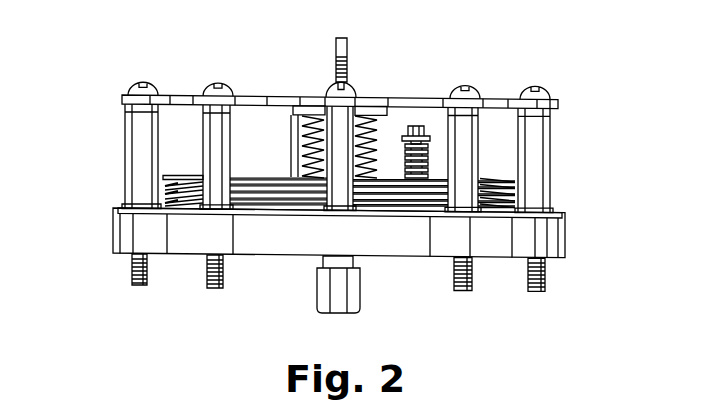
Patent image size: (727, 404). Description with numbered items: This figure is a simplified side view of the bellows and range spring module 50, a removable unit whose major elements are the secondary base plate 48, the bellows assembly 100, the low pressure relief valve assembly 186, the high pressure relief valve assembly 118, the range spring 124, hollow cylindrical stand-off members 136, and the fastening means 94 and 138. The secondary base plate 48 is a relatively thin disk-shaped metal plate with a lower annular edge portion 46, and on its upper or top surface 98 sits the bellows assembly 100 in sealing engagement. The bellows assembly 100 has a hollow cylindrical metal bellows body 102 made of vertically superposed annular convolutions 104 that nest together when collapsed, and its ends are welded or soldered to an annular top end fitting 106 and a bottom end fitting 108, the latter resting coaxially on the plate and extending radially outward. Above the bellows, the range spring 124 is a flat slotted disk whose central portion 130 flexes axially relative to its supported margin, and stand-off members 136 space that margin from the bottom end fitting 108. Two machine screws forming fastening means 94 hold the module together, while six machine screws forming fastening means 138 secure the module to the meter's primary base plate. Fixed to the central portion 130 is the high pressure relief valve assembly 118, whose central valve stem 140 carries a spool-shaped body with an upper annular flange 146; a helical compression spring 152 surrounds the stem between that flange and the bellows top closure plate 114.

The bellows and range spring module 50 is at (334, 156).
The range spring 124 is at (178, 96).
The fastening means 138 is at (142, 81).
The hollow cylindrical stand-off member 136 is at (128, 117).
The bottom end fitting 108 is at (457, 213).
The fastening means 94 is at (352, 86).
The central valve stem 140 is at (345, 47).
The high pressure relief valve assembly 118 is at (327, 137).
The central portion 130 is at (363, 100).
The upper annular flange 146 is at (300, 114).
The helical compression spring 152 is at (300, 146).
The low pressure relief valve assembly 186 is at (418, 123).
The bellows assembly 100 is at (334, 160).
The convolutions 104 is at (180, 189).
The bellows top closure plate 114 is at (250, 165).
The top end fitting 106 is at (182, 175).
The metal bellows body 102 is at (512, 186).
The upper or top surface 98 is at (116, 209).
The secondary base plate 48 is at (255, 258).
The lower annular edge portion 46 is at (168, 258).